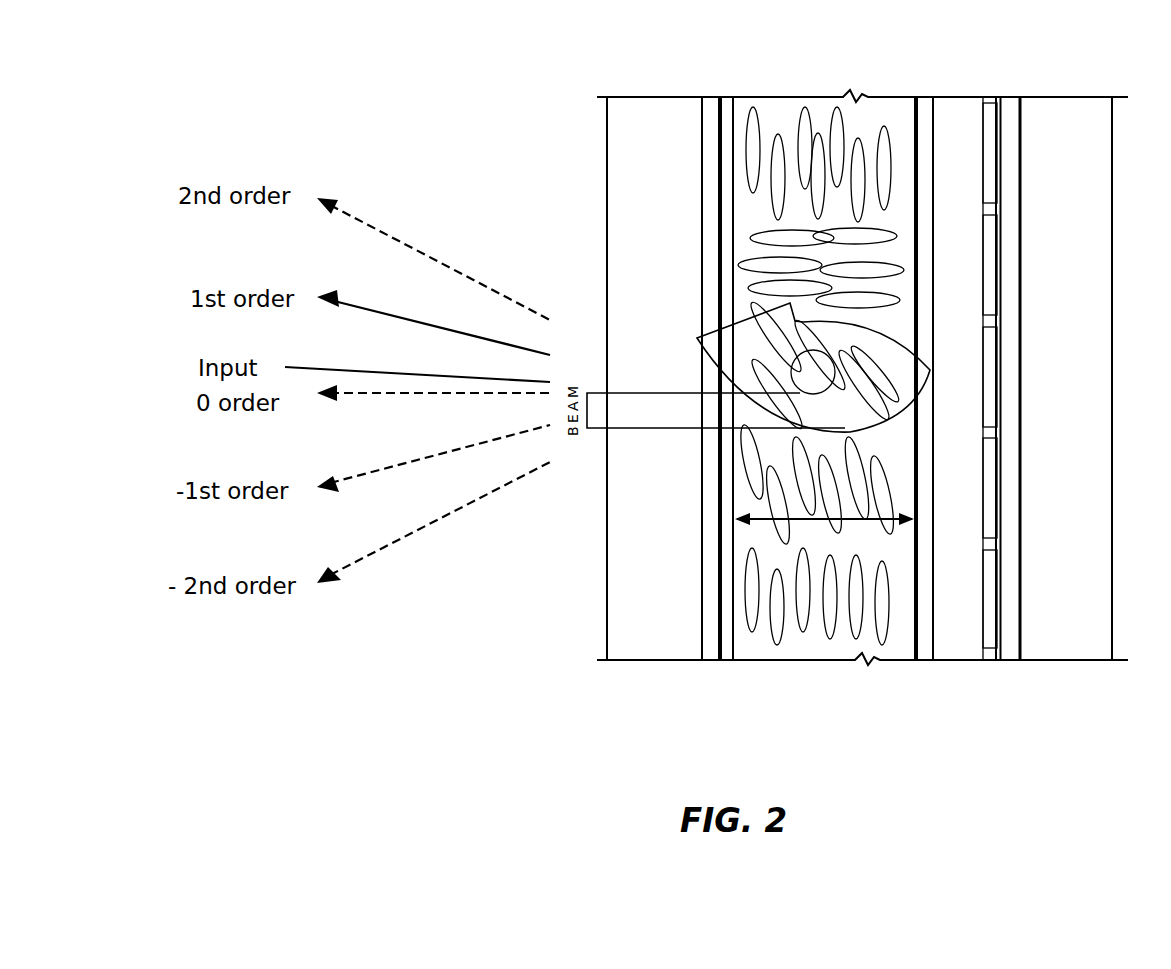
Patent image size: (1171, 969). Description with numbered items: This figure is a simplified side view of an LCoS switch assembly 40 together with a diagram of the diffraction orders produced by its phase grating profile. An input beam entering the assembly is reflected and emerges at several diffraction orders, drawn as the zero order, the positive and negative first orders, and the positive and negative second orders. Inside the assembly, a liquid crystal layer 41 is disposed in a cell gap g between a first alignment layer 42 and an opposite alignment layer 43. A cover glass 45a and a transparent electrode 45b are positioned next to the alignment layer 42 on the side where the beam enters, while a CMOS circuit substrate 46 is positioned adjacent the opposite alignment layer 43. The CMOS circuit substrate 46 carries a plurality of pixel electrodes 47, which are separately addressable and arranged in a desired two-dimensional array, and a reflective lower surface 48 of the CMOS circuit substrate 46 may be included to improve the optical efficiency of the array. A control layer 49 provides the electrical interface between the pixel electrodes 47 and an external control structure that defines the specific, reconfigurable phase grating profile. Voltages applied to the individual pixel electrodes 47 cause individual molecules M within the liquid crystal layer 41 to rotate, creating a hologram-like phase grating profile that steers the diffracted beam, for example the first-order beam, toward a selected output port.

The LCoS switch assembly 40 is at (538, 50).
The liquid crystal layer 41 is at (828, 97).
The alignment layer 42 is at (723, 97).
The alignment layer 43 is at (927, 97).
The cover glass 45a is at (658, 97).
The transparent electrode 45b is at (713, 97).
The CMOS circuit substrate 46 is at (965, 97).
The pixel electrodes 47 is at (987, 648).
The reflective lower surface 48 is at (1010, 180).
The control layer 49 is at (1047, 265).
The cell gap g is at (824, 532).
The molecules M is at (777, 645).